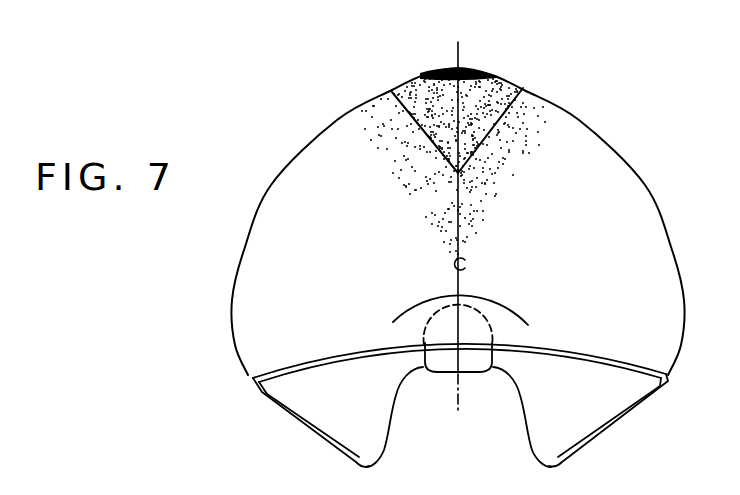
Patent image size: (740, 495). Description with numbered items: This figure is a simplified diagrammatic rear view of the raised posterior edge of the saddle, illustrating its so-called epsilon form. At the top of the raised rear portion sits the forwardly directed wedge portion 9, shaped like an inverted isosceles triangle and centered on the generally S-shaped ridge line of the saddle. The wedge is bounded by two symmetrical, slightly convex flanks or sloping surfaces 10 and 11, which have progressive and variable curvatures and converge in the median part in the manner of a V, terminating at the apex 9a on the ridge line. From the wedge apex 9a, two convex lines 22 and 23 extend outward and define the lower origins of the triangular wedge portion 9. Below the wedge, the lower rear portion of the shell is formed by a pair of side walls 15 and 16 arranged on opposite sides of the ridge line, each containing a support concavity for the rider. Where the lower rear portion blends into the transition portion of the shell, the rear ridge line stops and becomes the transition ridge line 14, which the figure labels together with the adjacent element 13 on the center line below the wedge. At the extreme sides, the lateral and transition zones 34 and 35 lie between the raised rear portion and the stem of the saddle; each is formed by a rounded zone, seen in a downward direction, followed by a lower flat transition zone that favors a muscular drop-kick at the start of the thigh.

The wedge portion 9 is at (445, 66).
The apex 9a is at (466, 268).
The sloping surface 10 is at (548, 116).
The sloping surface 11 is at (383, 111).
The lens 13 is at (487, 290).
The transition ridge line 14 is at (458, 357).
The side wall 15 is at (540, 313).
The side wall 16 is at (380, 300).
The convex line 22 is at (508, 177).
The convex line 23 is at (386, 163).
The lateral and transition zone 34 is at (612, 393).
The lateral and transition zone 35 is at (340, 400).